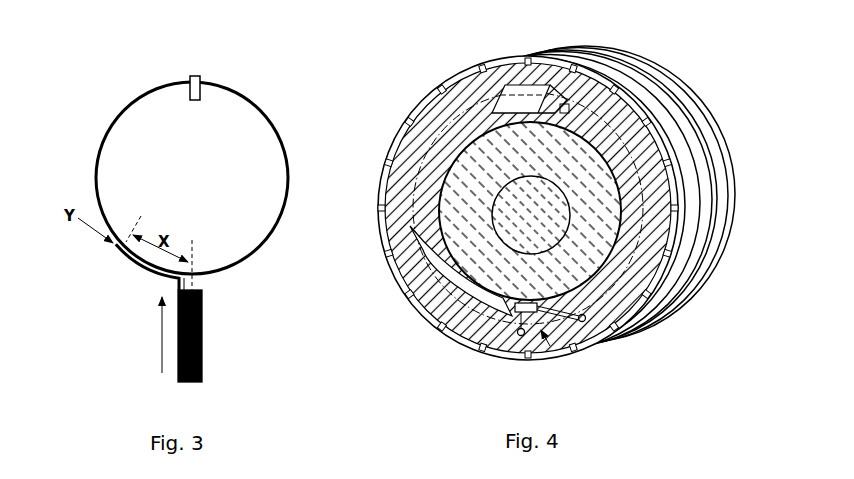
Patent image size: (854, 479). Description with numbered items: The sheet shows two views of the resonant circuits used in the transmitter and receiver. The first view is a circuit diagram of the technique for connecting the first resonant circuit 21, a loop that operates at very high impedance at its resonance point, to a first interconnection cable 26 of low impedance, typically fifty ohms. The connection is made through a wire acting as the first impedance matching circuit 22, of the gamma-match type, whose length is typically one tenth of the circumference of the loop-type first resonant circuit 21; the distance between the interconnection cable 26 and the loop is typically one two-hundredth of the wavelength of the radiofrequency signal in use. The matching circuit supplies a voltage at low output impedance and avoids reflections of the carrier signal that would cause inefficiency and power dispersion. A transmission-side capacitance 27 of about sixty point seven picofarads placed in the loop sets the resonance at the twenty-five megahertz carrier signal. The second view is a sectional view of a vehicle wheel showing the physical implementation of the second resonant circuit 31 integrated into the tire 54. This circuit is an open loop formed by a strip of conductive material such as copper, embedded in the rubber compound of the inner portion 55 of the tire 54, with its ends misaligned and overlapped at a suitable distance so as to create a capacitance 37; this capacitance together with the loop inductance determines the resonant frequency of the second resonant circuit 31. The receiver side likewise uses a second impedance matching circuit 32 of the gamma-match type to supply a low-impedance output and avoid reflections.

In FIG. 3, the first resonant circuit 21 is at (121, 116).
In FIG. 3, the first impedance matching circuit 22 is at (130, 260).
In FIG. 3, the first interconnection cable 26 is at (202, 325).
In FIG. 3, the transmission-side capacitance 27 is at (190, 75).
In FIG. 4, the second resonant circuit 31 is at (450, 123).
In FIG. 4, the second impedance matching circuit 32 is at (545, 358).
In FIG. 4, the capacitance 37 is at (573, 92).
In FIG. 4, the tire 54 is at (678, 270).
In FIG. 4, the inner portion 55 is at (437, 311).